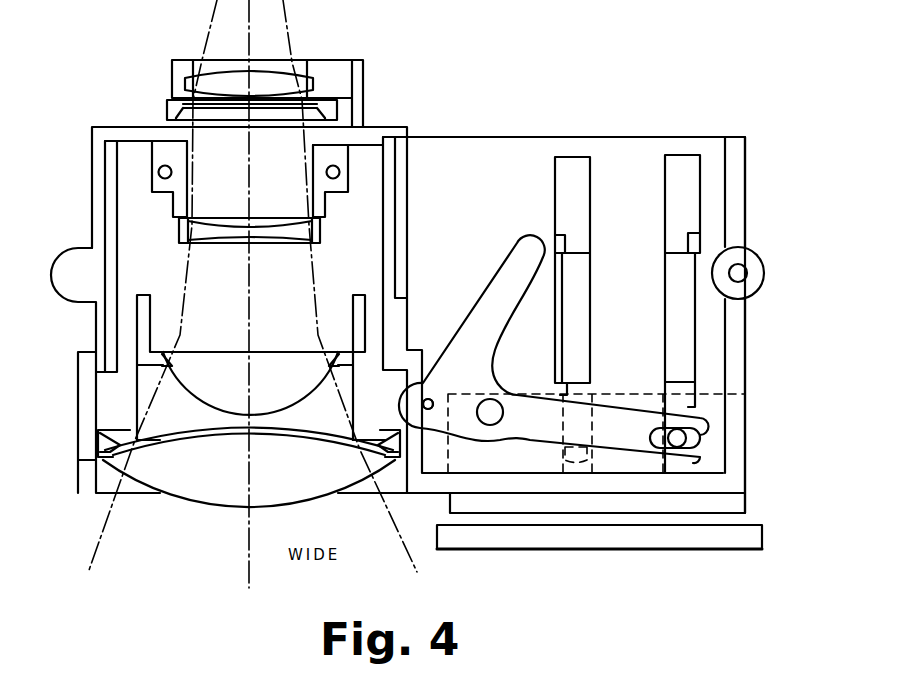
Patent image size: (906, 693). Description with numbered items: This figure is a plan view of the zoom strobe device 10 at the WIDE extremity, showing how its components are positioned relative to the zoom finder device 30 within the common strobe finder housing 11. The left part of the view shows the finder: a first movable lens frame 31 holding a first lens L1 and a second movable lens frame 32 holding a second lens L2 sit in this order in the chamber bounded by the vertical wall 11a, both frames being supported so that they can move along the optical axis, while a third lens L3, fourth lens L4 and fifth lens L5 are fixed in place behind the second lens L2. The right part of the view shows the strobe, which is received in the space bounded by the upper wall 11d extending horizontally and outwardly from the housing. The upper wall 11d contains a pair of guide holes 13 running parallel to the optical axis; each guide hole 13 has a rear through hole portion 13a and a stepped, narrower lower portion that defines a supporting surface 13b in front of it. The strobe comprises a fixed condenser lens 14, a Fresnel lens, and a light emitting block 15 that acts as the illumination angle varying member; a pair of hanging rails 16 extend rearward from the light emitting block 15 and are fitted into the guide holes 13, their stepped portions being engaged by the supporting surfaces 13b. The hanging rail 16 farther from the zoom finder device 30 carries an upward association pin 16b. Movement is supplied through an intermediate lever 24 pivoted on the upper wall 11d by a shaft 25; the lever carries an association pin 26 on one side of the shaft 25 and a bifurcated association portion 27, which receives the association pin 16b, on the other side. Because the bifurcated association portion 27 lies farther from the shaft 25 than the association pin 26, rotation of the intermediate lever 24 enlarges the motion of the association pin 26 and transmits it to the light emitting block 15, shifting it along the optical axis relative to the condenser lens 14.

The zoom strobe device 10 is at (634, 335).
The strobe finder housing 11 is at (384, 294).
The vertical wall 11a is at (85, 445).
The upper wall 11d is at (468, 160).
The guide holes 13 is at (651, 270).
The rear through hole portion 13a is at (677, 170).
The supporting surface 13b is at (557, 243).
The fixed condenser lens 14 is at (763, 540).
The light emitting block 15 is at (712, 450).
The hanging rails 16 is at (677, 318).
The association pin 16b is at (673, 452).
The intermediate lever 24 is at (530, 422).
The shaft 25 is at (490, 425).
The association pin 26 is at (424, 412).
The bifurcated association portion 27 is at (685, 455).
The zoom finder device 30 is at (384, 293).
The first movable lens frame 31 is at (105, 462).
The second movable lens frame 32 is at (140, 330).
The first lens L1 is at (212, 500).
The second lens L2 is at (293, 417).
The third lens L3 is at (263, 236).
The fourth lens L4 is at (268, 107).
The fifth lens L5 is at (277, 76).